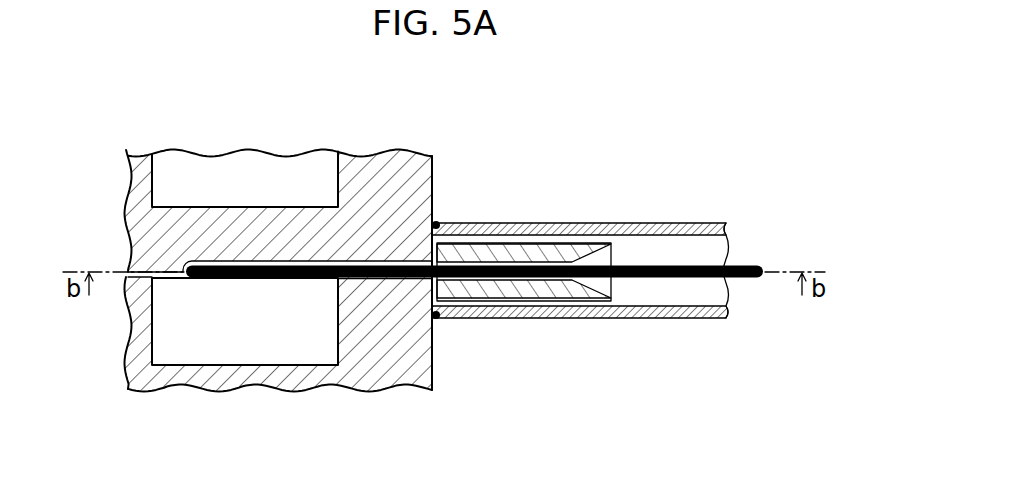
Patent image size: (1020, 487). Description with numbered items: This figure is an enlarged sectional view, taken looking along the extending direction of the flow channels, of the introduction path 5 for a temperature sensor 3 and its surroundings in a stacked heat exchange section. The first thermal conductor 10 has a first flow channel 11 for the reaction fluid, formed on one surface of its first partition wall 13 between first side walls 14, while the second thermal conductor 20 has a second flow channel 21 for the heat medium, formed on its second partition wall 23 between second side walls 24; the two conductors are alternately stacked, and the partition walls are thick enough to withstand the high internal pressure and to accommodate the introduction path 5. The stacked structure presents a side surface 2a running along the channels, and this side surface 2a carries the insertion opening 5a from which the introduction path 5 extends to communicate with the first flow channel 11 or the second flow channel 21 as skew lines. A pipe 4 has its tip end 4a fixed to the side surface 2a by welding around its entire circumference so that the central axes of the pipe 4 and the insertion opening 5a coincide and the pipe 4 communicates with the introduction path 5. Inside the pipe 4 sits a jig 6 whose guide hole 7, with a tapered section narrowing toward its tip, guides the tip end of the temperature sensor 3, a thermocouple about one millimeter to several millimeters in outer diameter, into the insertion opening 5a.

The second thermal conductor 20 is at (136, 150).
The first thermal conductor 10 is at (146, 387).
The second flow channel 21 is at (272, 192).
The first flow channel 11 is at (272, 329).
The second partition wall 23 is at (263, 233).
The first partition wall 13 is at (245, 373).
The second side walls 24 is at (380, 193).
The first side walls 14 is at (367, 347).
The side surface 2a is at (435, 360).
The introduction path 5 is at (205, 289).
The insertion opening 5a is at (460, 281).
The pipe 4 is at (503, 222).
The tip end of pipe 4a is at (417, 222).
The jig 6 is at (573, 243).
The guide hole 7 is at (588, 286).
The temperature sensor 3 is at (637, 263).